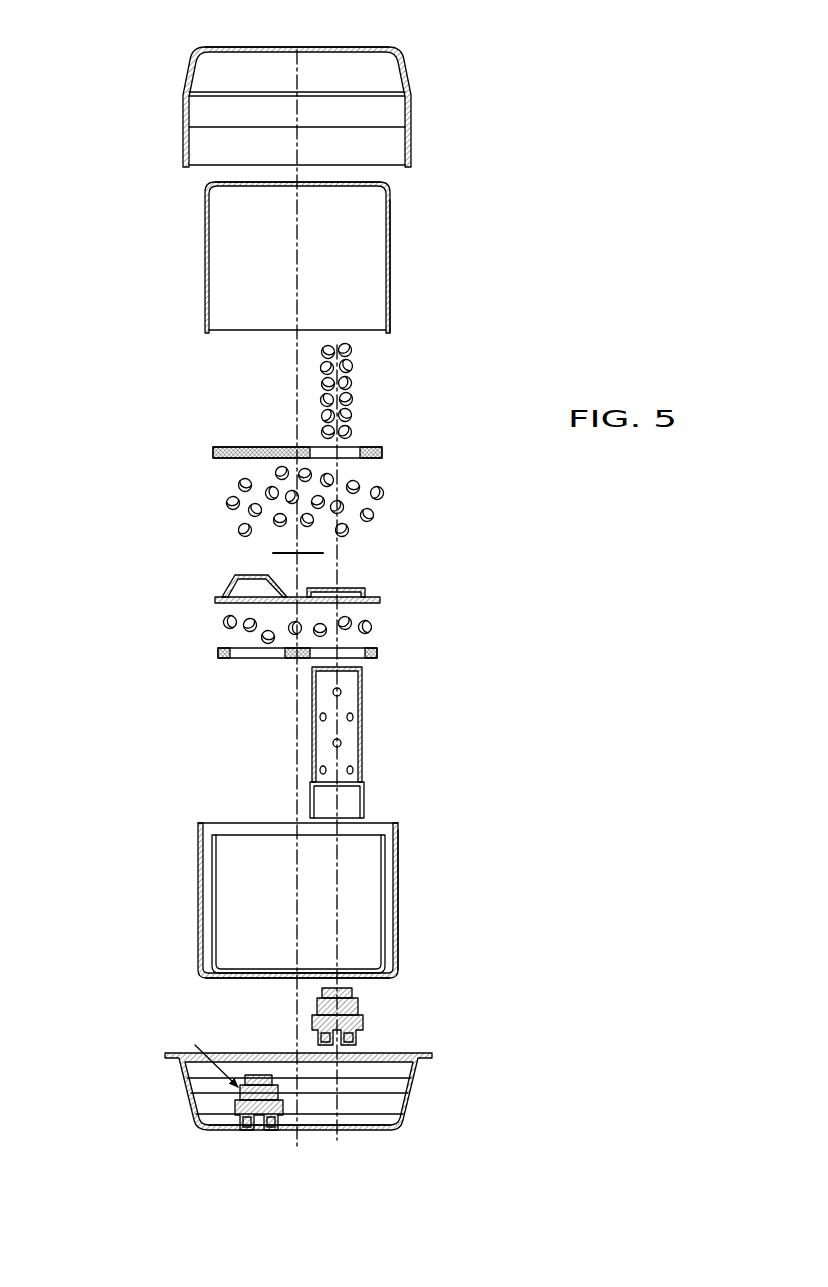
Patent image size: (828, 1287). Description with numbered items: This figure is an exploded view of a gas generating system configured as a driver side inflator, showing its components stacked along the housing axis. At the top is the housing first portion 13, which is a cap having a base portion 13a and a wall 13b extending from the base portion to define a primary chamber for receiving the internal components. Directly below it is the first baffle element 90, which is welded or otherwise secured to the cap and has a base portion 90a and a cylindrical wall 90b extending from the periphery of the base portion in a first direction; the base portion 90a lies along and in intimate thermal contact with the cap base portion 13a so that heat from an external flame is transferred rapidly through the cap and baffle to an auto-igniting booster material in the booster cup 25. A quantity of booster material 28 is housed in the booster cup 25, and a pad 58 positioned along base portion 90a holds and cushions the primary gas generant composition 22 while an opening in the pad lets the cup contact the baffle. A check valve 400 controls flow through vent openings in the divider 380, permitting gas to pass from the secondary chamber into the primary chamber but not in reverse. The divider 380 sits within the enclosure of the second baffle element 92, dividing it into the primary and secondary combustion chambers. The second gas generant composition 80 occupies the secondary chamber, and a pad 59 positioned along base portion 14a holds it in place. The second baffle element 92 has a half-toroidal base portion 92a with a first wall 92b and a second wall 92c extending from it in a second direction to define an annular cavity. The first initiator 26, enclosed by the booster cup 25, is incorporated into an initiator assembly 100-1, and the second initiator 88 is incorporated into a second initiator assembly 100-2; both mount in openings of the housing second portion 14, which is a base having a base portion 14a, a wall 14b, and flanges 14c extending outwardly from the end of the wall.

The first portion 13 is at (287, 96).
The base portion 13a is at (213, 48).
The wall 13b is at (187, 108).
The first baffle element 90 is at (307, 257).
The base portion 90a is at (208, 183).
The cylindrical wall 90b is at (392, 253).
The booster material 28 is at (348, 417).
The pad 58 is at (382, 452).
The gas generant composition 22 is at (368, 512).
The check valve 400 is at (270, 548).
The divider 380 is at (217, 597).
The second gas generant composition 80 is at (373, 623).
The pad 59 is at (250, 660).
The booster cup 25 is at (348, 710).
The second baffle element 92 is at (296, 888).
The base portion 92a is at (200, 973).
The first wall 92b is at (398, 847).
The second wall 92c is at (212, 907).
The first initiator 26 is at (350, 995).
The initiator assembly 100-1 is at (409, 965).
The second initiator 88 is at (258, 1075).
The second initiator assembly 100-2 is at (231, 1091).
The second portion 14 is at (257, 1127).
The base portion 14a is at (363, 1130).
The wall 14b is at (192, 1113).
The flanges 14c is at (167, 1057).